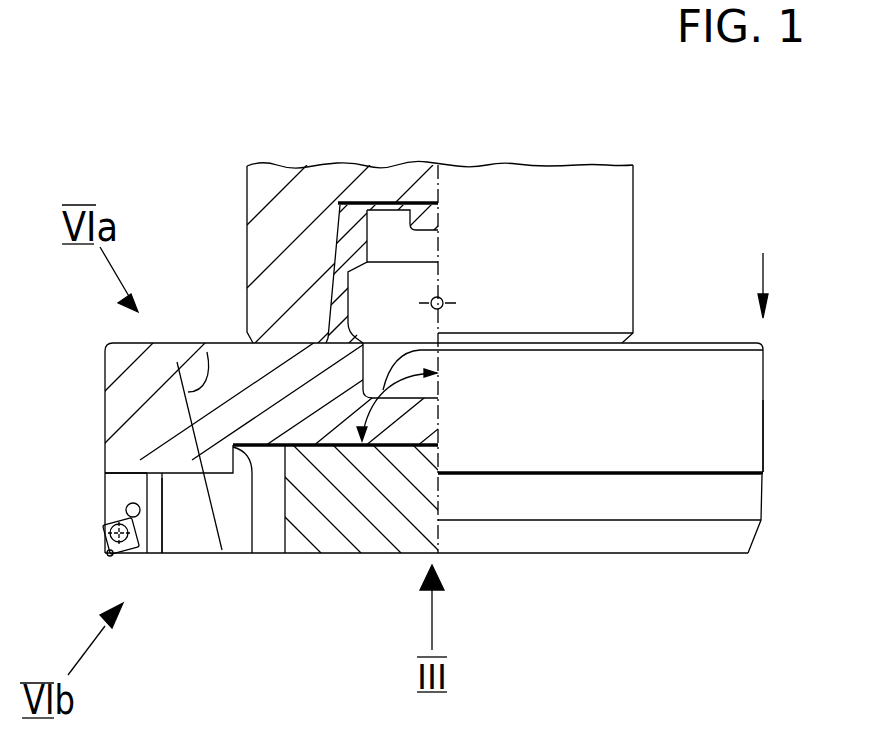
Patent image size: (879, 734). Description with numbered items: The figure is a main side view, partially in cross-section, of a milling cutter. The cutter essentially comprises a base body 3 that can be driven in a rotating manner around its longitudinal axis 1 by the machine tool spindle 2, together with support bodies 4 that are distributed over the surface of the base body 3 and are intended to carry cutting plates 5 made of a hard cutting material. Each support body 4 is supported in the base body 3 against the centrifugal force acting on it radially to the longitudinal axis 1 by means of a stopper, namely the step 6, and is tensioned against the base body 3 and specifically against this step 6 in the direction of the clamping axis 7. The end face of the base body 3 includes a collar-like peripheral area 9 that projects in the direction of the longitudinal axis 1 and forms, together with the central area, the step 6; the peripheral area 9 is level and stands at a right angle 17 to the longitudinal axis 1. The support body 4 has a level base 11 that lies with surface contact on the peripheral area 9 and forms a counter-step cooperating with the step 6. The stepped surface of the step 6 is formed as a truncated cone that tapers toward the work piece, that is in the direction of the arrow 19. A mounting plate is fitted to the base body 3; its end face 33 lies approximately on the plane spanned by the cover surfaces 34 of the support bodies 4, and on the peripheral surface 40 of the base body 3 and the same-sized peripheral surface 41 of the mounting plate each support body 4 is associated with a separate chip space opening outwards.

The longitudinal axis 1 is at (444, 200).
The machine tool spindle 2 is at (600, 270).
The base body 3 is at (710, 383).
The support body 4 is at (187, 531).
The cutting plate 5 is at (105, 527).
The step 6 is at (253, 555).
The clamping axis 7 is at (205, 352).
The peripheral area 9 is at (128, 476).
The base of the support body 11 is at (181, 461).
The right angle 17 is at (440, 332).
The arrow 19 is at (763, 278).
The end face of the mounting plate 33 is at (562, 556).
The cover surface 34 is at (177, 556).
The peripheral surface of the base body 40 is at (763, 420).
The peripheral surface of the mounting plate 41 is at (762, 492).